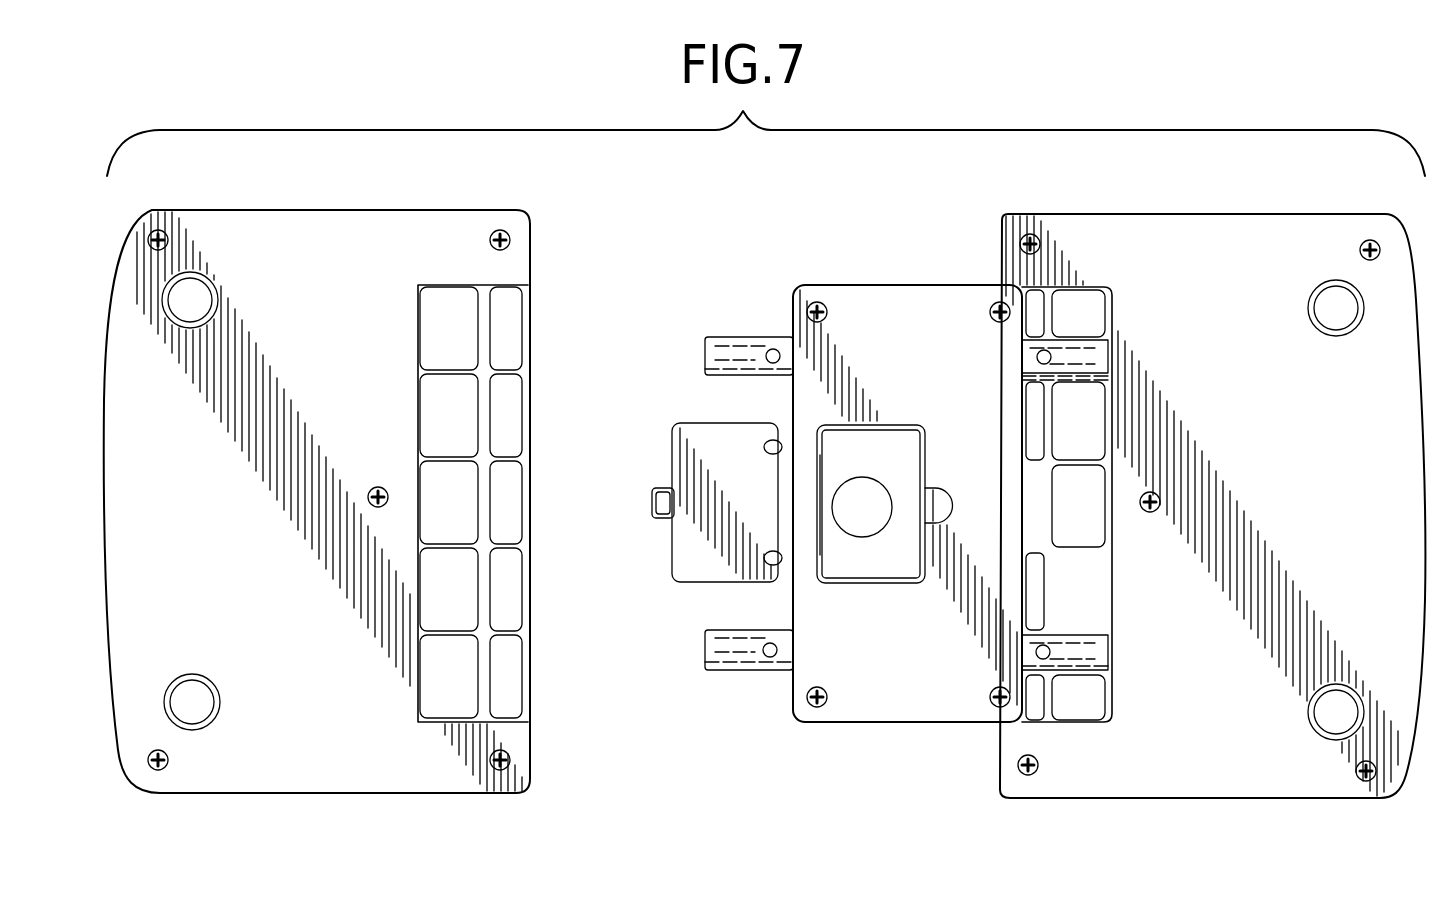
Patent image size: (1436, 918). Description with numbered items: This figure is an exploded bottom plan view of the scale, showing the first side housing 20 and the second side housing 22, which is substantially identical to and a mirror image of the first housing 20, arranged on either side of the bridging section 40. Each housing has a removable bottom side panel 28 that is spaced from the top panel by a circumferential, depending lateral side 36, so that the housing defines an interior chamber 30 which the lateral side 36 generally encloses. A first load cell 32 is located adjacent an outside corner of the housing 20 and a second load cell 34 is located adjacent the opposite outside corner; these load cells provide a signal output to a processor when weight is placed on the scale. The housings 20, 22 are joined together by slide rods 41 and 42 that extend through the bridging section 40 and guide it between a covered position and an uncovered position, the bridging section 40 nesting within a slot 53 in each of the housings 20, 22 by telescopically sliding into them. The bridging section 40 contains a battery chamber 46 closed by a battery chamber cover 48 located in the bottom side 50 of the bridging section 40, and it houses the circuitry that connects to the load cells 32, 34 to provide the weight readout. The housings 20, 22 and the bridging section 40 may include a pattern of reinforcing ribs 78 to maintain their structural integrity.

The first side housing 20 is at (231, 771).
The second side housing 22 is at (1198, 780).
The bottom side panel 28 is at (307, 777).
The chamber 30 is at (328, 664).
The first load cell 32 is at (207, 703).
The second load cell 34 is at (206, 303).
The lateral side 36 is at (537, 584).
The bridging section 40 is at (907, 534).
The slide rod 41 is at (730, 336).
The slide rod 42 is at (730, 660).
The battery chamber 46 is at (852, 573).
The battery chamber cover 48 is at (702, 575).
The bottom side 50 is at (955, 625).
The slot 53 is at (419, 414).
The reinforcing ribs 78 is at (493, 358).